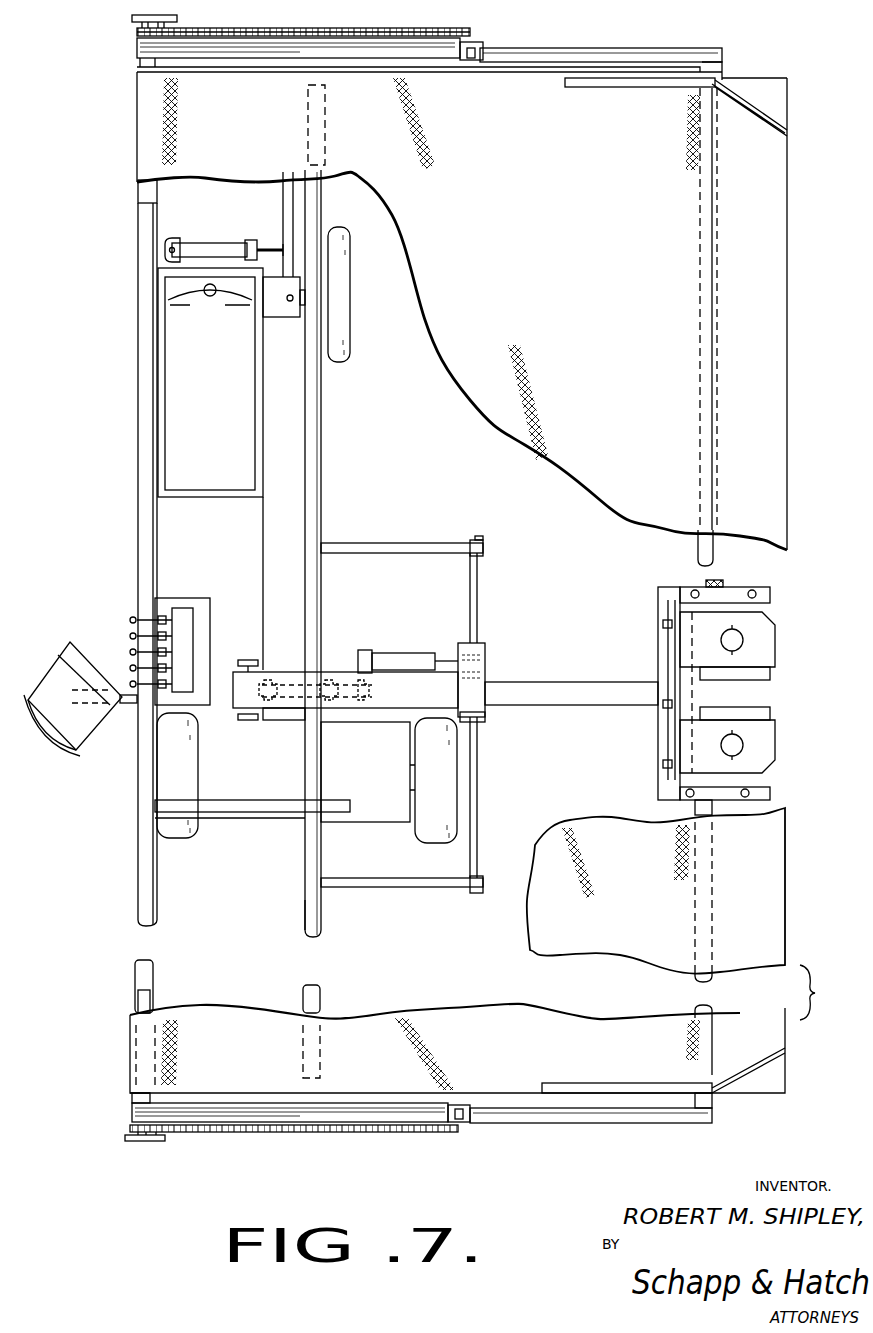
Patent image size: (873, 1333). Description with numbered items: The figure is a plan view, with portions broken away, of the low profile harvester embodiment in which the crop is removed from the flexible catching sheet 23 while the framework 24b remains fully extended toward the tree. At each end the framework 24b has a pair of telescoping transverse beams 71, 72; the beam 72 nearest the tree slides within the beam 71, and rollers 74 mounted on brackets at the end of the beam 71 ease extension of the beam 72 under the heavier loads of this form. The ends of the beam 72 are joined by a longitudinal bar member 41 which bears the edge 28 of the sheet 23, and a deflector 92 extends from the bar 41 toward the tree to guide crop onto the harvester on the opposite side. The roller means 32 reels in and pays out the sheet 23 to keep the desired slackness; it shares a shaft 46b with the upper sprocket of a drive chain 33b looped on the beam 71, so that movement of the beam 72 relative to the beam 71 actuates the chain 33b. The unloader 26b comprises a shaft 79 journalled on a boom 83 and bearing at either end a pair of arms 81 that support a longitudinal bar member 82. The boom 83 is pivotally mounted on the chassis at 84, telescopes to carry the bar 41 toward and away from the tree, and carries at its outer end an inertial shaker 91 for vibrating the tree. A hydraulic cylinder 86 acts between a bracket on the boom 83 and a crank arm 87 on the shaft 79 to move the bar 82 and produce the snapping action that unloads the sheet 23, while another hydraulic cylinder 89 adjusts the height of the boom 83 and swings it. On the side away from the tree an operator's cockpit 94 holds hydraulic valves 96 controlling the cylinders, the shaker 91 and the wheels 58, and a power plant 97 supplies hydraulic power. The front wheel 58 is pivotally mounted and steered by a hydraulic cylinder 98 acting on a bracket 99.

The flexible catching sheet 23 is at (580, 234).
The framework 24b is at (385, 1130).
The unloader 26b is at (344, 535).
The edge of the sheet 28 is at (712, 130).
The roller means 32 is at (140, 192).
The drive chain 33b is at (330, 28).
The longitudinal bar member 41 is at (698, 545).
The shaft 46b is at (140, 1100).
The wheels 58 is at (346, 336).
The transverse beam 71 is at (262, 52).
The transverse beam 72 is at (527, 56).
The rollers 74 is at (470, 1120).
The shaft 79 is at (470, 588).
The arms 81 is at (393, 544).
The longitudinal bar member 82 is at (303, 920).
The boom 83 is at (548, 683).
The pivotal mounting 84 is at (246, 670).
The hydraulic cylinder 86 is at (414, 660).
The crank arm 87 is at (485, 662).
The hydraulic cylinder 89 is at (292, 678).
The shaker 91 is at (658, 610).
The deflector 92 is at (775, 884).
The operator's cockpit 94 is at (86, 632).
The hydraulic valves 96 is at (172, 622).
The power plant 97 is at (172, 382).
The hydraulic cylinder 98 is at (214, 245).
The bracket 99 is at (290, 210).